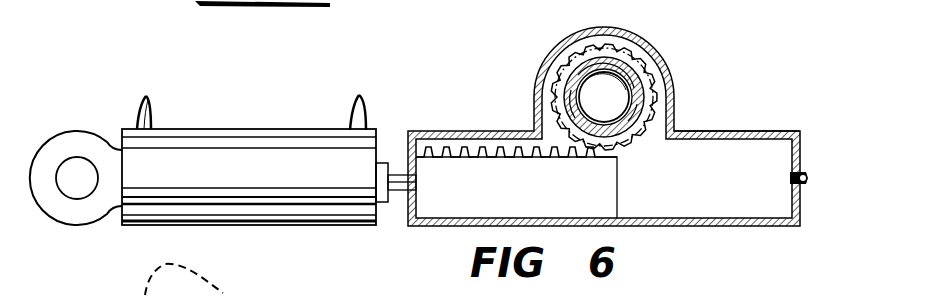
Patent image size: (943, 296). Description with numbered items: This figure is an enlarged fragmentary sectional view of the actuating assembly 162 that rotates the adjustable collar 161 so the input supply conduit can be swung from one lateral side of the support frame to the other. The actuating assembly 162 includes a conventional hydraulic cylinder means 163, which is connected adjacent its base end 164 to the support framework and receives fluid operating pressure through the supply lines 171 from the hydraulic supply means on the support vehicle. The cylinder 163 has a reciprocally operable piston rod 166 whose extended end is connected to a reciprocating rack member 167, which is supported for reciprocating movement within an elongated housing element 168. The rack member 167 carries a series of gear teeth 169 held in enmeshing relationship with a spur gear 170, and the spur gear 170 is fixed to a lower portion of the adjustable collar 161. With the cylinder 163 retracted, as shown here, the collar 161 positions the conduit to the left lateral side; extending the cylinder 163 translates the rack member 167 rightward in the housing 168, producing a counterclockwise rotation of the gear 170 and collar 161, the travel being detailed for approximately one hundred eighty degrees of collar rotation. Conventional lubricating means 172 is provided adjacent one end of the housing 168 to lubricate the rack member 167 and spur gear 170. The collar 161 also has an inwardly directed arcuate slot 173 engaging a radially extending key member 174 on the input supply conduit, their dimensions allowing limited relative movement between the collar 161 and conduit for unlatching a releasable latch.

The adjustable collar means 161 is at (651, 64).
The actuating assembly 162 is at (685, 80).
The hydraulic cylinder means 163 is at (292, 143).
The base end 164 is at (68, 157).
The piston rod 166 is at (395, 172).
The rack member 167 is at (618, 203).
The housing element 168 is at (722, 140).
The gear teeth 169 is at (480, 147).
The spur gear 170 is at (633, 148).
The supply lines 171 is at (152, 105).
The lubricating means 172 is at (837, 158).
The arcuate slot 173 is at (628, 56).
The key member 174 is at (602, 62).